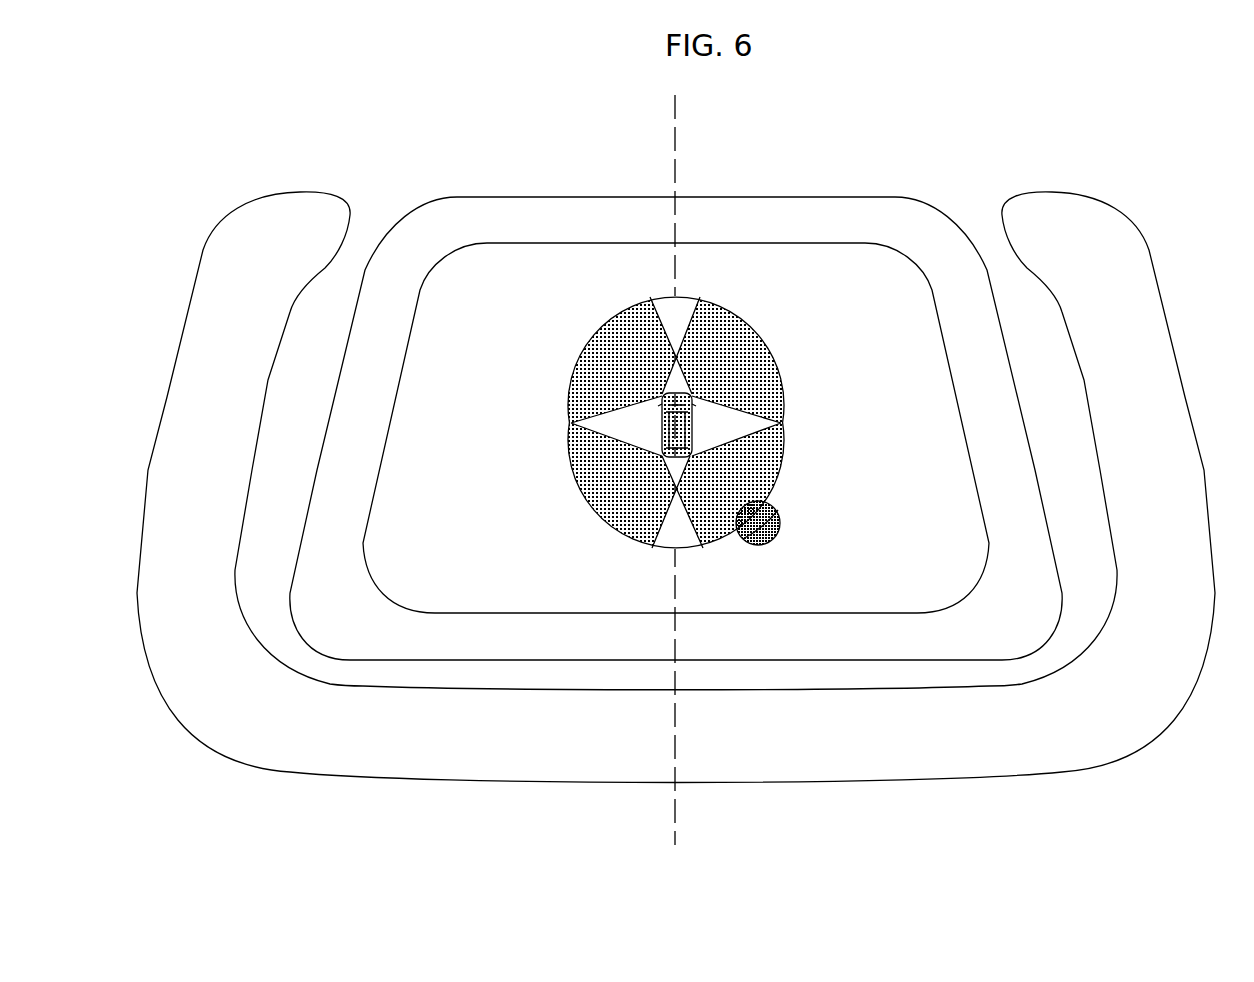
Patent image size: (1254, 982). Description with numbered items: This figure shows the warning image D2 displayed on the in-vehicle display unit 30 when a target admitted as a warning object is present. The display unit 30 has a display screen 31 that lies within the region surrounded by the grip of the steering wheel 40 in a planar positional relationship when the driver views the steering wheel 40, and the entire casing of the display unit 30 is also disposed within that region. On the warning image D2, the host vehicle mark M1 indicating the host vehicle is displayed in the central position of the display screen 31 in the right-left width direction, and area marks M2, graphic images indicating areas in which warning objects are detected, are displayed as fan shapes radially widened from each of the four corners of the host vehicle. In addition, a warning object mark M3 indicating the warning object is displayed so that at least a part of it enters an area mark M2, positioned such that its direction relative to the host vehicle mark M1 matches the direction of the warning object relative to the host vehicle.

The display unit 30 is at (440, 196).
The display screen 31 is at (540, 243).
The steering wheel 40 is at (326, 774).
The warning image D2 is at (635, 258).
The host vehicle mark M1 is at (693, 424).
The area mark M2 is at (583, 335).
The warning object mark M3 is at (782, 523).